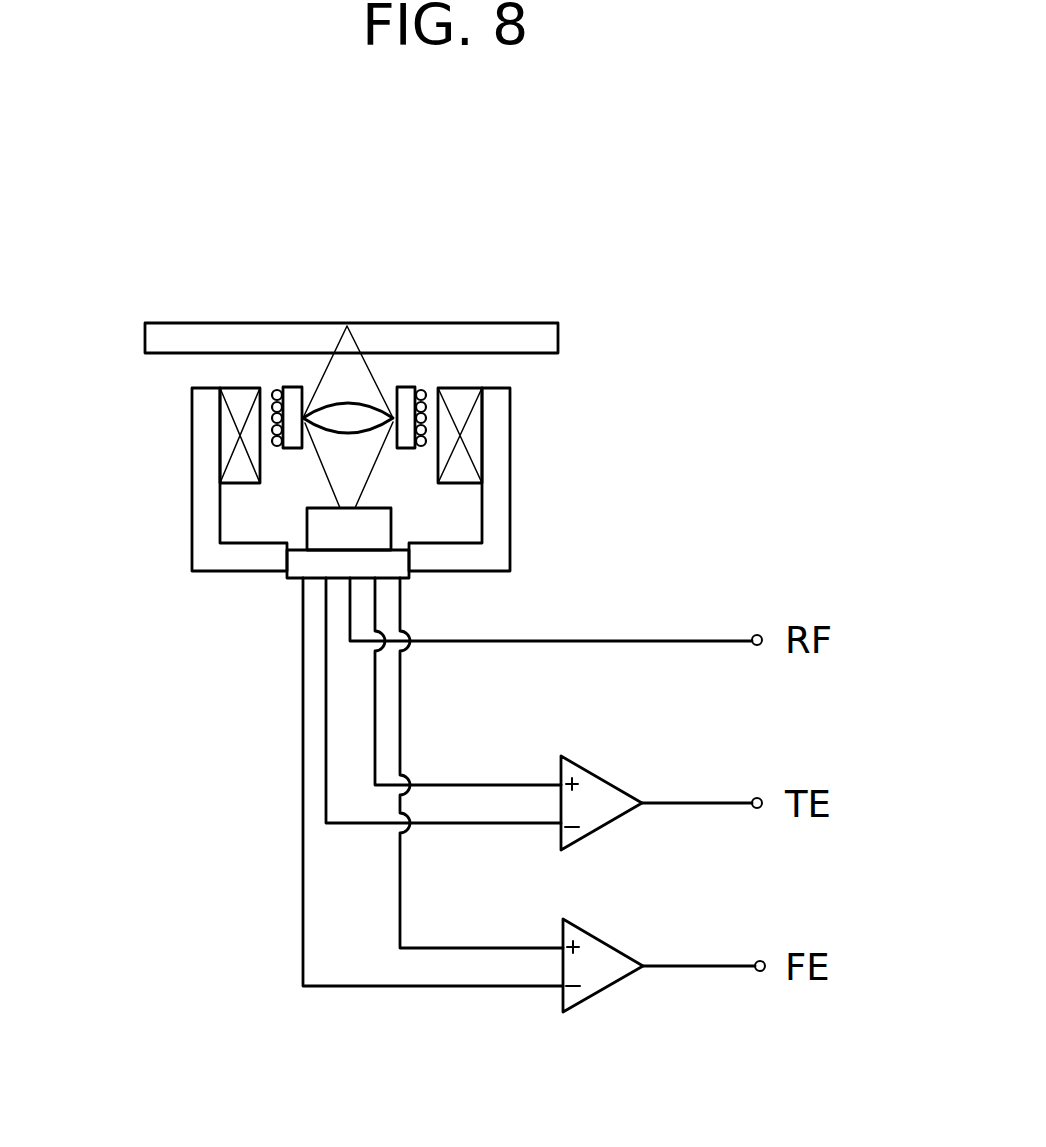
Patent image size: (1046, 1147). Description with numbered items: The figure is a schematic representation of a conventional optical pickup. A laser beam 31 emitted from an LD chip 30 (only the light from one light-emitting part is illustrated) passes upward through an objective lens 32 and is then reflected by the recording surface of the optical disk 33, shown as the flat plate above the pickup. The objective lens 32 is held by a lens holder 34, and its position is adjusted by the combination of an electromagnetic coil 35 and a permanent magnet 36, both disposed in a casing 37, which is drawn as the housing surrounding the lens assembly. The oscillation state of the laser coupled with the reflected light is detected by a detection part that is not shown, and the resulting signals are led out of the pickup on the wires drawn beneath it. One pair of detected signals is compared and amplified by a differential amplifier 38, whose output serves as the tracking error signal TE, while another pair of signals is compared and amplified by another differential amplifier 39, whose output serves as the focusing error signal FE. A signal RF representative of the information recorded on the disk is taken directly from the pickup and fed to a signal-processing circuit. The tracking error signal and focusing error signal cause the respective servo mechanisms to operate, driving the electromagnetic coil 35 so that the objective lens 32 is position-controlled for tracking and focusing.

The LD chip 30 is at (322, 538).
The laser beam 31 is at (370, 468).
The objective lens 32 is at (345, 412).
The optical disk 33 is at (545, 339).
The lens holder 34 is at (293, 442).
The electromagnetic coil 35 is at (275, 395).
The permanent magnet 36 is at (473, 440).
The casing 37 is at (208, 562).
The differential amplifier 38 is at (597, 792).
The differential amplifier 39 is at (612, 975).